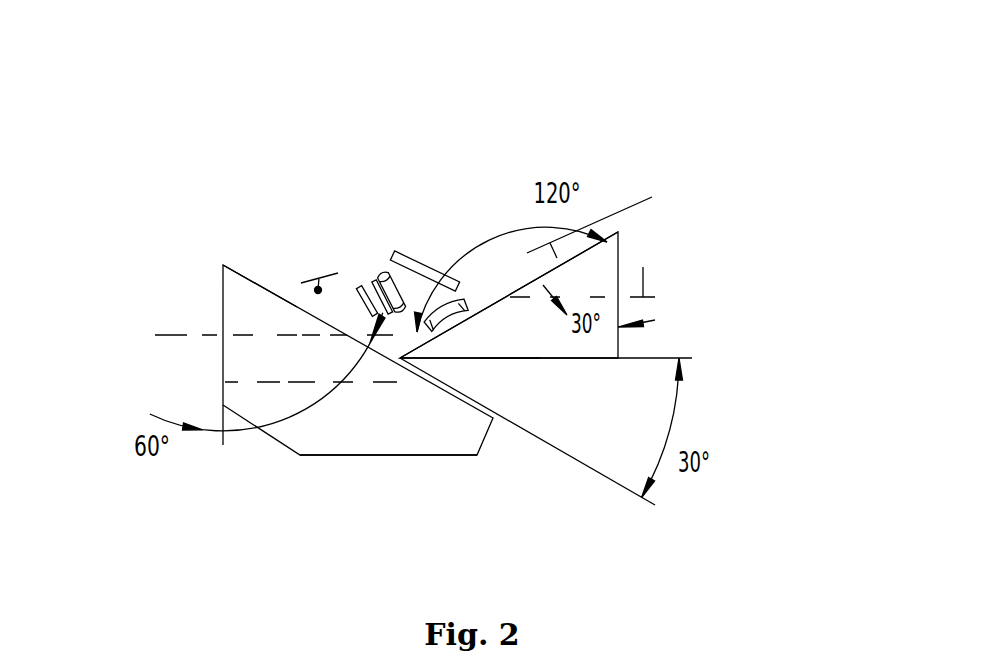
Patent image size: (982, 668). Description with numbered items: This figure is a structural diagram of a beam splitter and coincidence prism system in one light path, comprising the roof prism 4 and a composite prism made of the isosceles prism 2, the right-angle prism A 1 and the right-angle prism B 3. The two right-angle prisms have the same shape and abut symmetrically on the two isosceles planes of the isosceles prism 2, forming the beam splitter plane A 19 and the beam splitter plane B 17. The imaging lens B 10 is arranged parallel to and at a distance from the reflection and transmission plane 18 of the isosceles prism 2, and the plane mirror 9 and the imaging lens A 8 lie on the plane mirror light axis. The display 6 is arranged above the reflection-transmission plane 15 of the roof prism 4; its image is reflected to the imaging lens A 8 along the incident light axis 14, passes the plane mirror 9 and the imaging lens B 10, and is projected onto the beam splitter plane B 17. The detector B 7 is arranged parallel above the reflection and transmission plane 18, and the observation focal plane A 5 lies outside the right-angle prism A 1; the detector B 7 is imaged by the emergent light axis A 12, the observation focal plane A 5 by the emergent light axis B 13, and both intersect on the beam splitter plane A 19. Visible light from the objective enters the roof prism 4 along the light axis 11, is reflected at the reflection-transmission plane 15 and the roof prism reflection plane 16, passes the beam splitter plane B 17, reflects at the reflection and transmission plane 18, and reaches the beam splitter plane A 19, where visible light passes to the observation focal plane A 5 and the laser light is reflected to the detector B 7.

The right-angle prism A 1 is at (597, 346).
The isosceles prism 2 is at (580, 268).
The right-angle prism B 3 is at (512, 392).
The roof prism 4 is at (313, 432).
The observation focal plane A 5 is at (643, 297).
The display 6 is at (338, 273).
The detector B 7 is at (570, 229).
The imaging lens A 8 is at (358, 290).
The plane mirror 9 is at (438, 277).
The imaging lens B 10 is at (462, 305).
The incident light axis of object composite spectrum 11 is at (190, 335).
The emergent light axis A 12 is at (557, 258).
The emergent light axis B 13 is at (630, 297).
The incident light axis of display 14 is at (301, 283).
The reflection-transmission plane of roof prism 15 is at (297, 307).
The roof prism reflection plane 16 is at (388, 453).
The beam splitter plane B 17 is at (507, 358).
The reflection and transmission plane 18 is at (486, 308).
The beam splitter plane A 19 is at (563, 325).